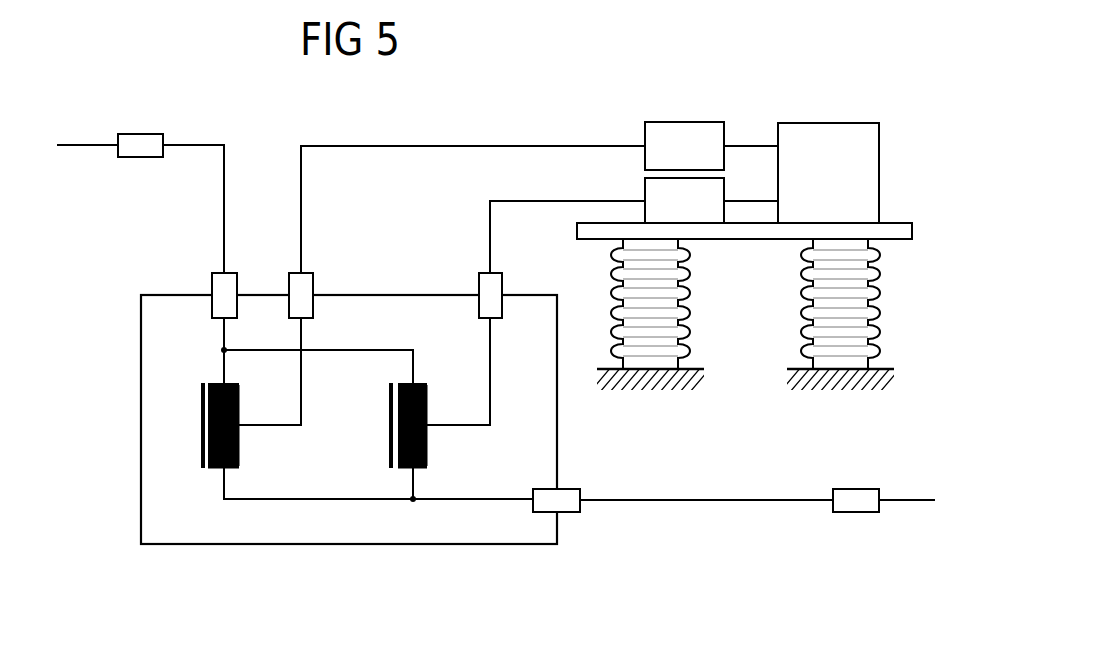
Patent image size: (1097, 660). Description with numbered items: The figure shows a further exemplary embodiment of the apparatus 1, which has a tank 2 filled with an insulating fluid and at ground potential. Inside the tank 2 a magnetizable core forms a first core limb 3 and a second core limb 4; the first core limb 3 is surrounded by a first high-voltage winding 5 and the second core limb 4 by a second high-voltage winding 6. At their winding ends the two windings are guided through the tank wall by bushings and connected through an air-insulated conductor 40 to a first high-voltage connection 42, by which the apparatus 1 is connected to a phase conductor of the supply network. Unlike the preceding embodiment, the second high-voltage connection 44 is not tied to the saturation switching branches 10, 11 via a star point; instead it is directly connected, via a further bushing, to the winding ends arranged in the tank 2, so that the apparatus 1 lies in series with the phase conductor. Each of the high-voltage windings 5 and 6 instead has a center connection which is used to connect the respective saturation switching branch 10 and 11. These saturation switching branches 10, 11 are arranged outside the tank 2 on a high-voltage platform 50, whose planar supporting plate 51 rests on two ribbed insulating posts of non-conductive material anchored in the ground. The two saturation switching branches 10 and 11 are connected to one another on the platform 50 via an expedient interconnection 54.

The apparatus 1 is at (322, 417).
The tank 2 is at (294, 544).
The first core limb 3 is at (228, 425).
The second core limb 4 is at (417, 426).
The first high-voltage winding 5 is at (240, 402).
The second high-voltage winding 6 is at (428, 404).
The saturation switching branch 10 is at (670, 158).
The saturation switching branch 11 is at (670, 214).
The air-insulated conductor 40 is at (200, 145).
The first high-voltage connection 42 is at (138, 134).
The second high-voltage connection 44 is at (853, 512).
The high-voltage platform 50 is at (776, 240).
The supporting plate 51 is at (912, 232).
The interconnection 54 is at (814, 187).